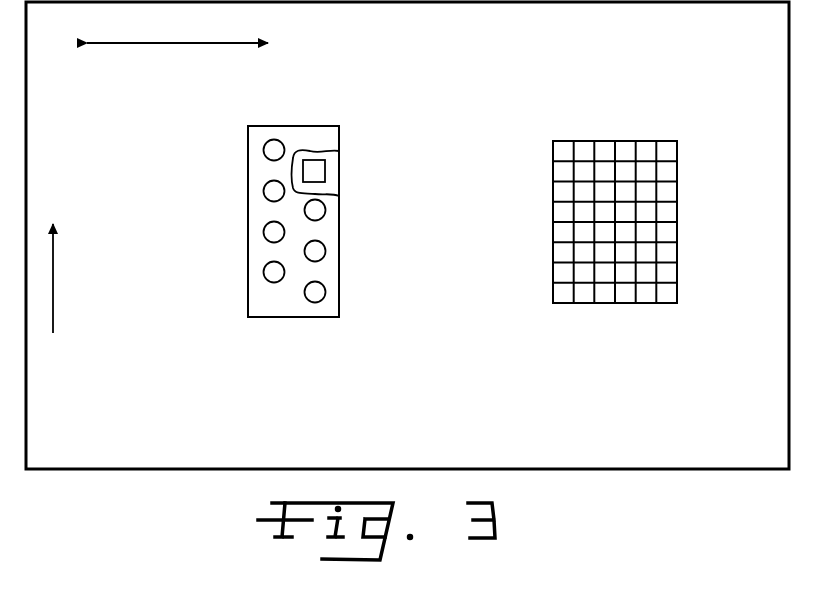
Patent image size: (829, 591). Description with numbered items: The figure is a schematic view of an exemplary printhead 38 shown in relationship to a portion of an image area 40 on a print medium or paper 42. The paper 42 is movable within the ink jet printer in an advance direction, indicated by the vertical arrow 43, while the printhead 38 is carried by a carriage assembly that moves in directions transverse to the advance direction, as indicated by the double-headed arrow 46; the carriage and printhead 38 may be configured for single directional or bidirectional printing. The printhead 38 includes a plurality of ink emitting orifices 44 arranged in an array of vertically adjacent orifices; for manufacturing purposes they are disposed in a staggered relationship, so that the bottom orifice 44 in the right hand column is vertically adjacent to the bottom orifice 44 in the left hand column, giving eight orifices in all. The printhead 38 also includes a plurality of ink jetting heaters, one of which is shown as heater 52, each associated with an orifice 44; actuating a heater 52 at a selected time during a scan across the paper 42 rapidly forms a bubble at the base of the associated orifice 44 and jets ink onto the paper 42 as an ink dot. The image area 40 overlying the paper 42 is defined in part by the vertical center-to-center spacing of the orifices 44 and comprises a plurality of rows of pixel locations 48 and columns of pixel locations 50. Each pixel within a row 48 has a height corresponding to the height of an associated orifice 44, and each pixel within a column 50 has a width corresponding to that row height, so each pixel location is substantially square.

The printhead 38 is at (310, 126).
The image area 40 is at (646, 140).
The print medium 42 is at (190, 452).
The advance direction arrow 43 is at (54, 248).
The ink emitting orifices 44 is at (264, 152).
The double-headed arrow 46 is at (108, 43).
The rows of pixel locations 48 is at (548, 155).
The columns of pixel locations 50 is at (583, 134).
The ink jetting heater 52 is at (318, 173).